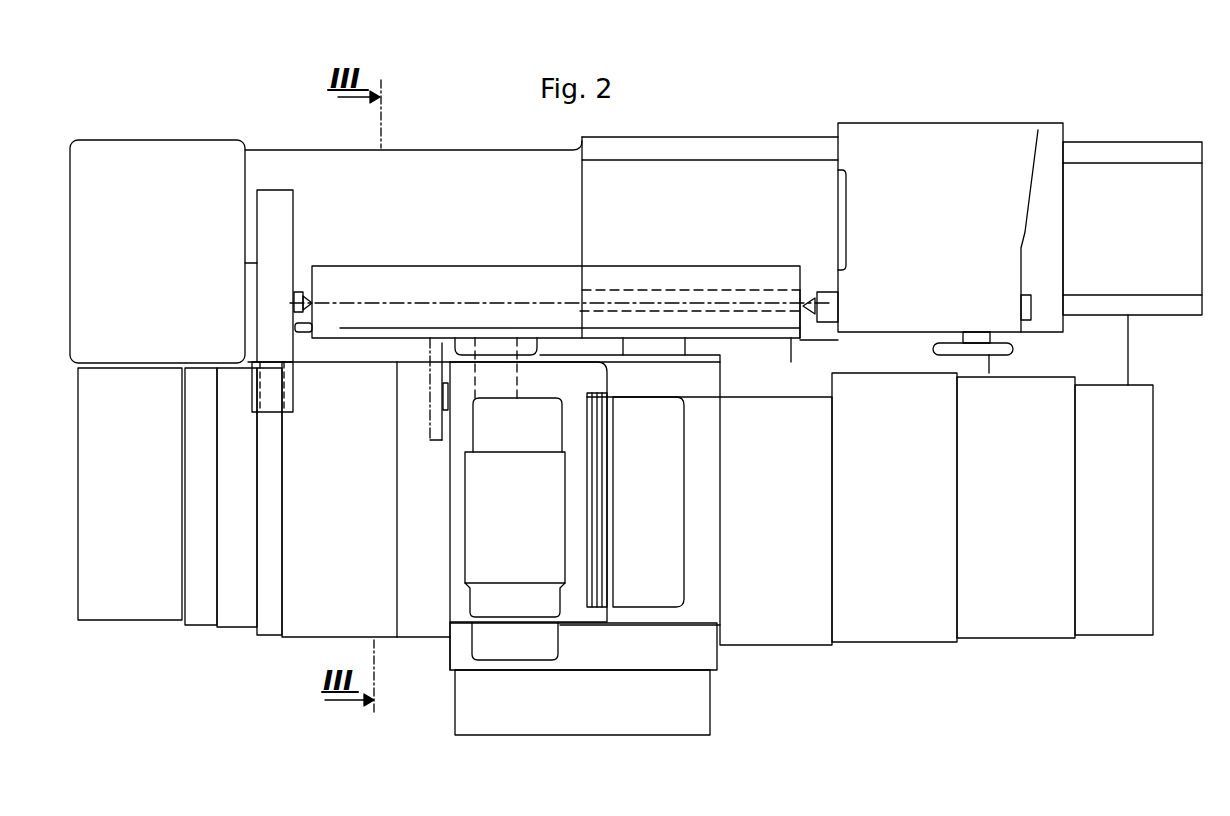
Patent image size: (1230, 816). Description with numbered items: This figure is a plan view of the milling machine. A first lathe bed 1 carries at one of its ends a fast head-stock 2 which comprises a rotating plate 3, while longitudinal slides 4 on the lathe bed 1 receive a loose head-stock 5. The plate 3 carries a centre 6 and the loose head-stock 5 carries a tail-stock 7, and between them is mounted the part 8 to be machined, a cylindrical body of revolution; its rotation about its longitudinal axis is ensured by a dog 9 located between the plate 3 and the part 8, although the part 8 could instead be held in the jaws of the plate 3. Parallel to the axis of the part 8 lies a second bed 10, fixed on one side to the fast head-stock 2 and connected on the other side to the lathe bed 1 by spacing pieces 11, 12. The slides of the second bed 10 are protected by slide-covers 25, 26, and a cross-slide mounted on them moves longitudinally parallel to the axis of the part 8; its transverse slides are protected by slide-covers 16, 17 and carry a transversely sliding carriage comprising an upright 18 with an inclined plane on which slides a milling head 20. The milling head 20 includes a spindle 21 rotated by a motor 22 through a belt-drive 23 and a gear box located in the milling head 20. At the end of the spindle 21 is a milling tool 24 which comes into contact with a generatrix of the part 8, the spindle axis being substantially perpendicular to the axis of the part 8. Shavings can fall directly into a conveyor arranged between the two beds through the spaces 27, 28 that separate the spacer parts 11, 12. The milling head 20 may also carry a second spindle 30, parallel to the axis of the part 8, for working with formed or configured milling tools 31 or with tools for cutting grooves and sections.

The first lathe bed 1 is at (470, 168).
The fast head-stock 2 is at (133, 153).
The rotating plate 3 is at (270, 202).
The longitudinal slides 4 is at (792, 158).
The loose head-stock 5 is at (1027, 143).
The centre 6 is at (300, 292).
The tail-stock 7 is at (812, 293).
The part to be machined 8 is at (490, 285).
The dog 9 is at (295, 327).
The second bed 10 is at (137, 606).
The spacing piece 11 is at (792, 352).
The spacing piece 12 is at (1108, 347).
The slide-cover 16 is at (700, 388).
The slide-cover 17 is at (685, 703).
The upright 18 is at (668, 590).
The milling head 20 is at (457, 606).
The spindle 21 is at (500, 392).
The motor 22 is at (483, 513).
The belt-drive 23 is at (545, 650).
The milling tool 24 is at (545, 345).
The slide-cover 25 is at (268, 620).
The slide-cover 26 is at (878, 628).
The space 27 is at (327, 350).
The space 28 is at (880, 352).
The second spindle 30 is at (443, 430).
The formed milling tools 31 is at (430, 412).